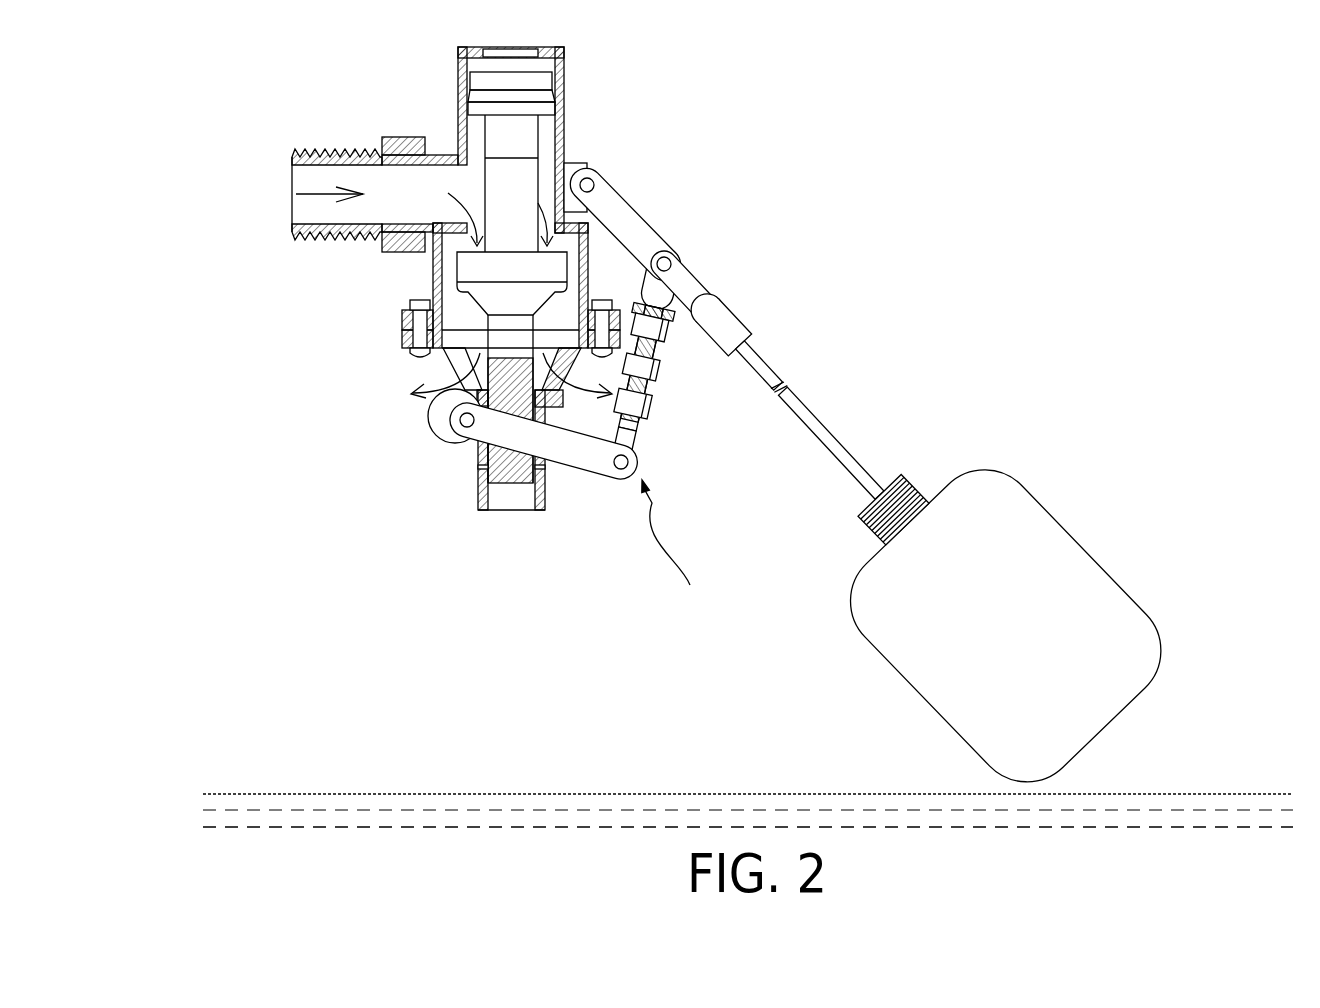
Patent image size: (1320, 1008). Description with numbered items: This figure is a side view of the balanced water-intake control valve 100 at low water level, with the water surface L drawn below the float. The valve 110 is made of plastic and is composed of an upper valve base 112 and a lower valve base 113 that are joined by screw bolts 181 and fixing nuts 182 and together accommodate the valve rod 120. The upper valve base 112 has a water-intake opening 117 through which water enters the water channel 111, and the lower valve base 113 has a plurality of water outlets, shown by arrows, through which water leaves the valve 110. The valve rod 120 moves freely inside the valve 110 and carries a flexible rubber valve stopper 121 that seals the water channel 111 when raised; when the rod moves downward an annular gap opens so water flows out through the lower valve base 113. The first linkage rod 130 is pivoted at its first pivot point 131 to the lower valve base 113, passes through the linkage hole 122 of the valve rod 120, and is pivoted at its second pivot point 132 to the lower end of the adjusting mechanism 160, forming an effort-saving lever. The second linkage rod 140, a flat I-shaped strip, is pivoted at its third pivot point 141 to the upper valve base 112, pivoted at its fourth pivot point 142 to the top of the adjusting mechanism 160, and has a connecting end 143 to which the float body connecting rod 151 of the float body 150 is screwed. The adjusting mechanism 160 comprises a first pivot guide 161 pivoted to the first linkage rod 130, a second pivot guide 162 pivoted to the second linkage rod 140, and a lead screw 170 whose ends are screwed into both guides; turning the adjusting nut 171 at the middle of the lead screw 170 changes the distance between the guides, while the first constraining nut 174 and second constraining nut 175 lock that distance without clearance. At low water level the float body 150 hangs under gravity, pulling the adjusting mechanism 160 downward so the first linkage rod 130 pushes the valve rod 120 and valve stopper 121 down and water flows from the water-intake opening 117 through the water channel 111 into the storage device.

The balanced water-intake control valve 100 is at (306, 123).
The valve 110 is at (278, 353).
The water channel 111 is at (550, 135).
The upper valve base 112 is at (402, 320).
The lower valve base 113 is at (402, 340).
The water-intake opening 117 is at (290, 178).
The valve rod 120 is at (483, 137).
The valve stopper 121 is at (457, 268).
The linkage hole 122 is at (478, 480).
The first linkage rod 130 is at (567, 470).
The first pivot point 131 is at (460, 432).
The second pivot point 132 is at (607, 482).
The second linkage rod 140 is at (640, 212).
The third pivot point 141 is at (608, 175).
The fourth pivot point 142 is at (673, 250).
The connecting end 143 is at (745, 318).
The float body 150 is at (1085, 545).
The float body connecting rod 151 is at (810, 410).
The adjusting mechanism 160 is at (682, 545).
The first pivot guide 161 is at (655, 455).
The second pivot guide 162 is at (667, 290).
The lead screw 170 is at (660, 350).
The adjusting nut 171 is at (652, 382).
The first constraining nut 174 is at (645, 420).
The second constraining nut 175 is at (690, 325).
The screw bolt 181 is at (413, 356).
The fixing nut 182 is at (410, 303).
The water level L is at (1185, 793).